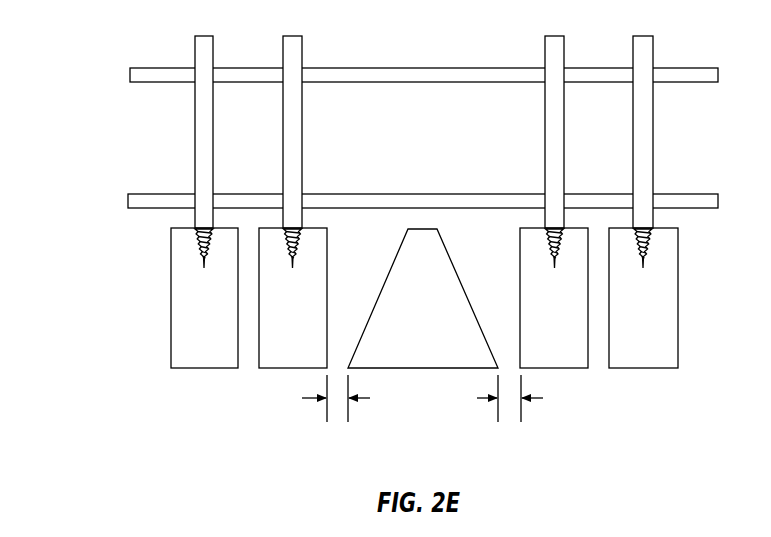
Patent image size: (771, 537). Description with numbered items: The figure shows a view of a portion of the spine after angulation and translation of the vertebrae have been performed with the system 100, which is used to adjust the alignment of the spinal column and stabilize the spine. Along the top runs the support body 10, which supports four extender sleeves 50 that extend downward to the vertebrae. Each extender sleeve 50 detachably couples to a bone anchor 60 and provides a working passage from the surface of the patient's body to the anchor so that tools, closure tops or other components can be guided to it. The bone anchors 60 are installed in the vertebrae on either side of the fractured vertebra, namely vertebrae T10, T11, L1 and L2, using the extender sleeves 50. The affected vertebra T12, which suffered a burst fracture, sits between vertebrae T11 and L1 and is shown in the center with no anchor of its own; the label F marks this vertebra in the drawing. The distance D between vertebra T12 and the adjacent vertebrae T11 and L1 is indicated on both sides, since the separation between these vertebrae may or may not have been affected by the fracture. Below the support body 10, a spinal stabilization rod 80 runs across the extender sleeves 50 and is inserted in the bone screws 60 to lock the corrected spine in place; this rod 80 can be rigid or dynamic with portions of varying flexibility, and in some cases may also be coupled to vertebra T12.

The system 100 is at (380, 254).
The support body 10 is at (695, 67).
The spinal stabilization rod 80 is at (695, 192).
The extender sleeve 50 is at (207, 127).
The bone anchor 60 is at (198, 255).
The vertebra T10 is at (202, 368).
The vertebra T11 is at (295, 368).
The vertebra T12 is at (427, 368).
The vertebra L1 is at (563, 368).
The vertebra L2 is at (653, 368).
The distance D is at (422, 411).
The trapezoidal tooth F is at (427, 230).